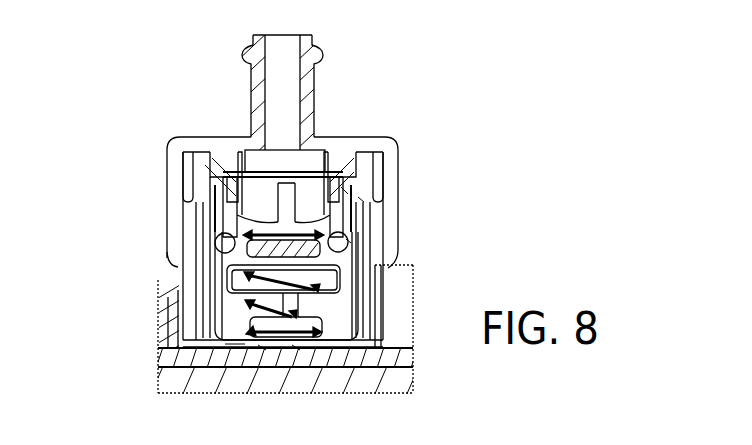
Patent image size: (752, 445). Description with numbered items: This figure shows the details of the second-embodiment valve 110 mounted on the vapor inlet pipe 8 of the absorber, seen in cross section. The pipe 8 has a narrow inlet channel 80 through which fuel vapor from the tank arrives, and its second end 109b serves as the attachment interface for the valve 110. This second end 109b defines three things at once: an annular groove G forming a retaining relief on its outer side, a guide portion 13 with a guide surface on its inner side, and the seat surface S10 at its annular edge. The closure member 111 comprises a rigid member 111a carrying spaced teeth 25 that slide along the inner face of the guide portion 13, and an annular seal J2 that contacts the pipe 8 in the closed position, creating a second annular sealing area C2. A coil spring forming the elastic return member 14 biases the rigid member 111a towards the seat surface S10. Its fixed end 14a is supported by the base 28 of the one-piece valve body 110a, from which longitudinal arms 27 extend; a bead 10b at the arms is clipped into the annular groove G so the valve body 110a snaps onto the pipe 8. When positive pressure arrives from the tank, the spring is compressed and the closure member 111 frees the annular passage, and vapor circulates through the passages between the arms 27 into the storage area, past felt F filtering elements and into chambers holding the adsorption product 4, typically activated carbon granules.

The pipe 8 is at (314, 102).
The narrow inlet channel 80 is at (277, 91).
The guide portion 13 is at (243, 155).
The seat surface S10 is at (208, 168).
The teeth 25 is at (289, 191).
The second annular sealing area C2 is at (347, 192).
The bead 10b is at (205, 228).
The second end 109b is at (363, 201).
The closure member 111 is at (198, 268).
The annular groove G is at (370, 222).
The annular seal J2 is at (350, 242).
The longitudinal arms 27 is at (208, 308).
The valve body 110a is at (378, 278).
The felt F is at (175, 340).
The elastic return member 14 is at (322, 292).
The adsorption product 4 is at (173, 385).
The rigid member 111a is at (233, 350).
The fixed end 14a is at (262, 348).
The base 28 is at (297, 350).
The valve 110 is at (372, 335).